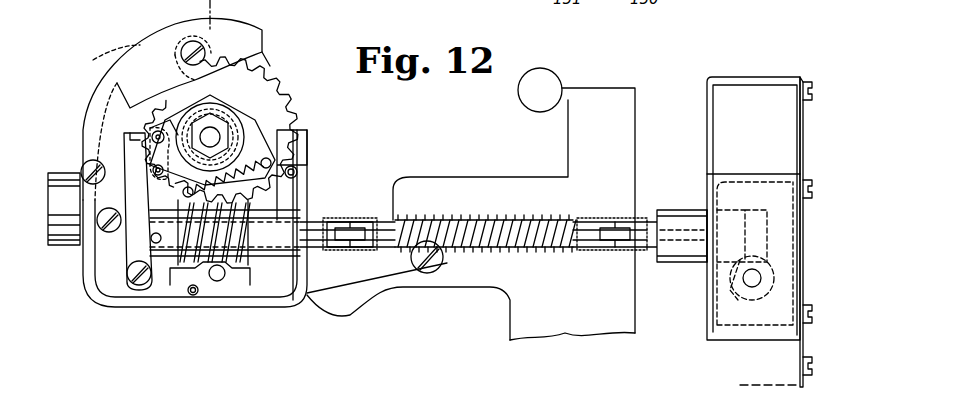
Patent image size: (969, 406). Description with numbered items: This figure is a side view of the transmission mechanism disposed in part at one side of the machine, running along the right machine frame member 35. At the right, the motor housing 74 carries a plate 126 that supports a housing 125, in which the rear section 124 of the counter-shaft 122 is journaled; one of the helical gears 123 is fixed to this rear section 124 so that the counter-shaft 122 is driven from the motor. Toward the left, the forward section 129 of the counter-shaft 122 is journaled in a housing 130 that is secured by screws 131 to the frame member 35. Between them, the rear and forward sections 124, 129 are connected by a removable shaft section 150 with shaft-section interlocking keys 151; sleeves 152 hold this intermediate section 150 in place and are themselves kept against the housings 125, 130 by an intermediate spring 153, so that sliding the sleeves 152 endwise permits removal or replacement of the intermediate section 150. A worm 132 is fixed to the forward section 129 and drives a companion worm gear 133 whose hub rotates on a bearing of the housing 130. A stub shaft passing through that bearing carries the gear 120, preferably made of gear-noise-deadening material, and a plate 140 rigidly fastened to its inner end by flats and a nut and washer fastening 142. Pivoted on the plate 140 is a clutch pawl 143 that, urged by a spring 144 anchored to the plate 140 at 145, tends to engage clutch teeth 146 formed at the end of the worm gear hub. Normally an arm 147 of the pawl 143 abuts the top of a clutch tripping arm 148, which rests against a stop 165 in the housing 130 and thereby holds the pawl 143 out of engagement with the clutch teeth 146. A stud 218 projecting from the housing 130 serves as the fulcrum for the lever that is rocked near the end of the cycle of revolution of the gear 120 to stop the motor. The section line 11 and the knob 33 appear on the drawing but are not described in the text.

The housing 130 is at (118, 52).
The arm 147 is at (133, 147).
The clutch tripping arm 148 is at (137, 150).
The machine frame member 35 is at (58, 170).
The clutch pawl 143 is at (210, 107).
The nut and washer fastening 142 is at (210, 108).
The plate 140 is at (260, 97).
The clutch teeth 146 is at (262, 95).
The gear 120 is at (341, 117).
The worm gear 133 is at (292, 146).
The spring anchor 145 is at (298, 170).
The sleeves 152 is at (345, 220).
The shaft-section interlocking keys 151 is at (358, 220).
The removable shaft section 150 is at (425, 220).
The counter-shaft 122 is at (514, 218).
The spring 153 is at (520, 250).
The rear section 124 is at (678, 210).
The housing 125 is at (752, 172).
The housing 74 is at (743, 82).
The plate 126 is at (809, 80).
The knob 33 is at (550, 72).
The screws 131 is at (108, 233).
The stop 165 is at (156, 244).
The stud 218 is at (217, 282).
The worm 132 is at (220, 263).
The forward section 129 is at (290, 247).
The helical gears 123 is at (745, 298).
The spring 144 is at (230, 186).
The section line 11 is at (238, 339).